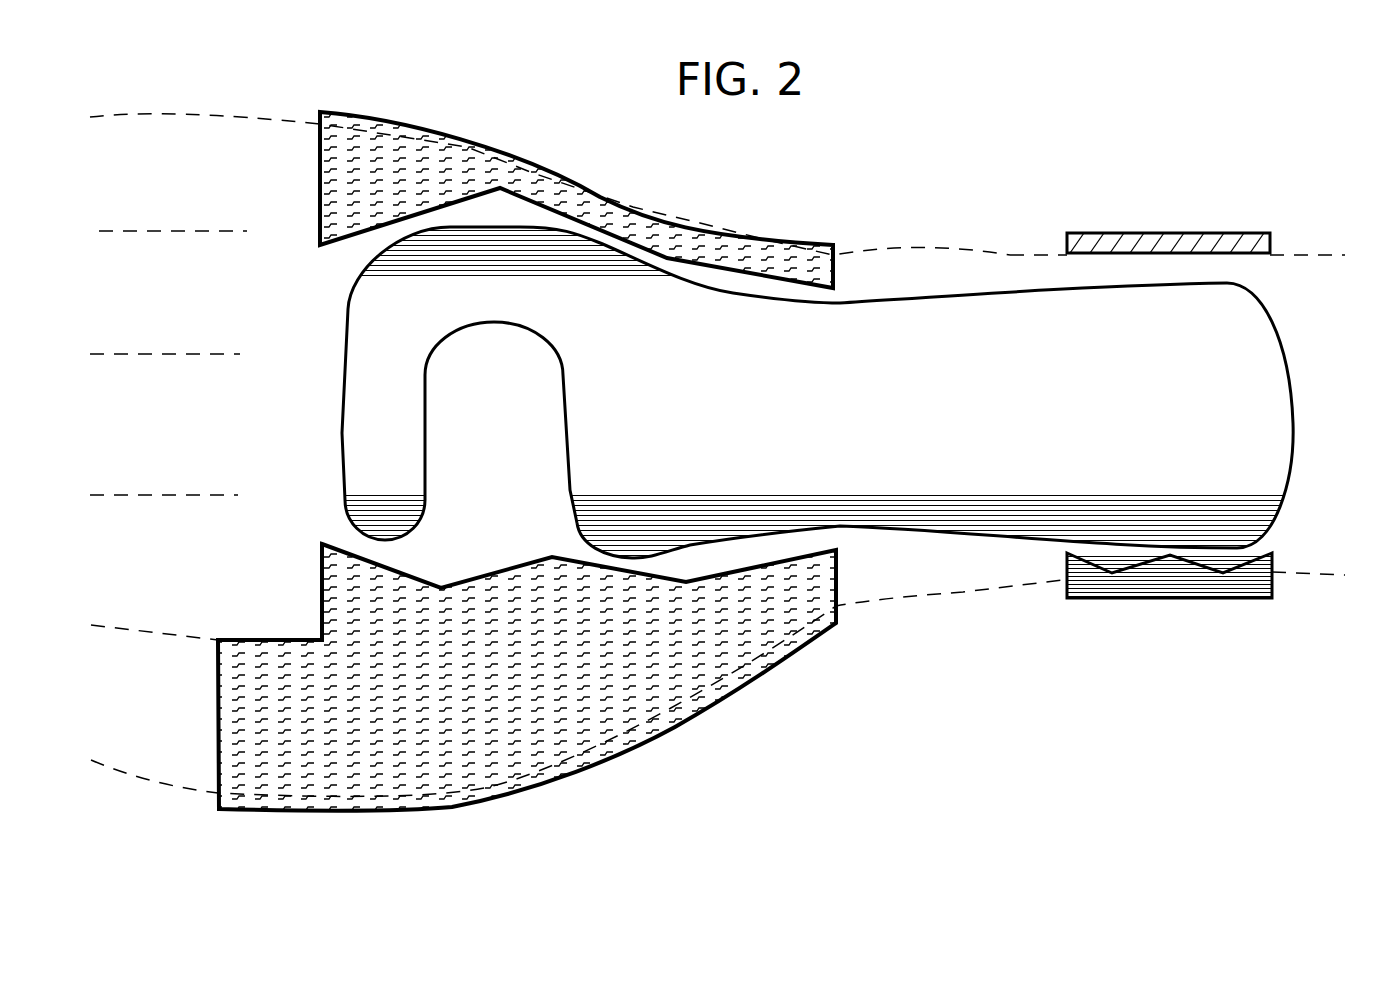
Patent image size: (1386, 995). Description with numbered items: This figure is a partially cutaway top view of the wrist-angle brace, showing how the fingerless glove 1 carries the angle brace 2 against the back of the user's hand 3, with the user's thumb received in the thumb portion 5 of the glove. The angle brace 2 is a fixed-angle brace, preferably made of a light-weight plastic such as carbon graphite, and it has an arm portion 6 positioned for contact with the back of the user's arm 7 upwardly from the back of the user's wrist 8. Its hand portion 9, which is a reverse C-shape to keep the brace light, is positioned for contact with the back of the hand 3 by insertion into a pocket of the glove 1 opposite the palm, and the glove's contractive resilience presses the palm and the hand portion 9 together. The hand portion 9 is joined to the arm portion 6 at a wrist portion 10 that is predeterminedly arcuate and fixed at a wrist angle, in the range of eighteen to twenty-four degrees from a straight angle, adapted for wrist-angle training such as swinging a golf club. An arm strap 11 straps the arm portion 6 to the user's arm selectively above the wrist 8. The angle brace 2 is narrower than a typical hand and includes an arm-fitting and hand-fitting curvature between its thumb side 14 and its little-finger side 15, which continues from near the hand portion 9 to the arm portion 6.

The fingerless glove 1 is at (752, 764).
The angle brace 2 is at (1314, 427).
The hand 3 is at (478, 412).
The thumb portion 5 is at (277, 712).
The arm portion 6 is at (1145, 412).
The arm 7 is at (1310, 255).
The wrist 8 is at (917, 275).
The hand portion 9 is at (365, 412).
The wrist portion 10 is at (847, 412).
The arm strap 11 is at (1145, 242).
The thumb side 14 is at (637, 542).
The little-finger side 15 is at (475, 242).